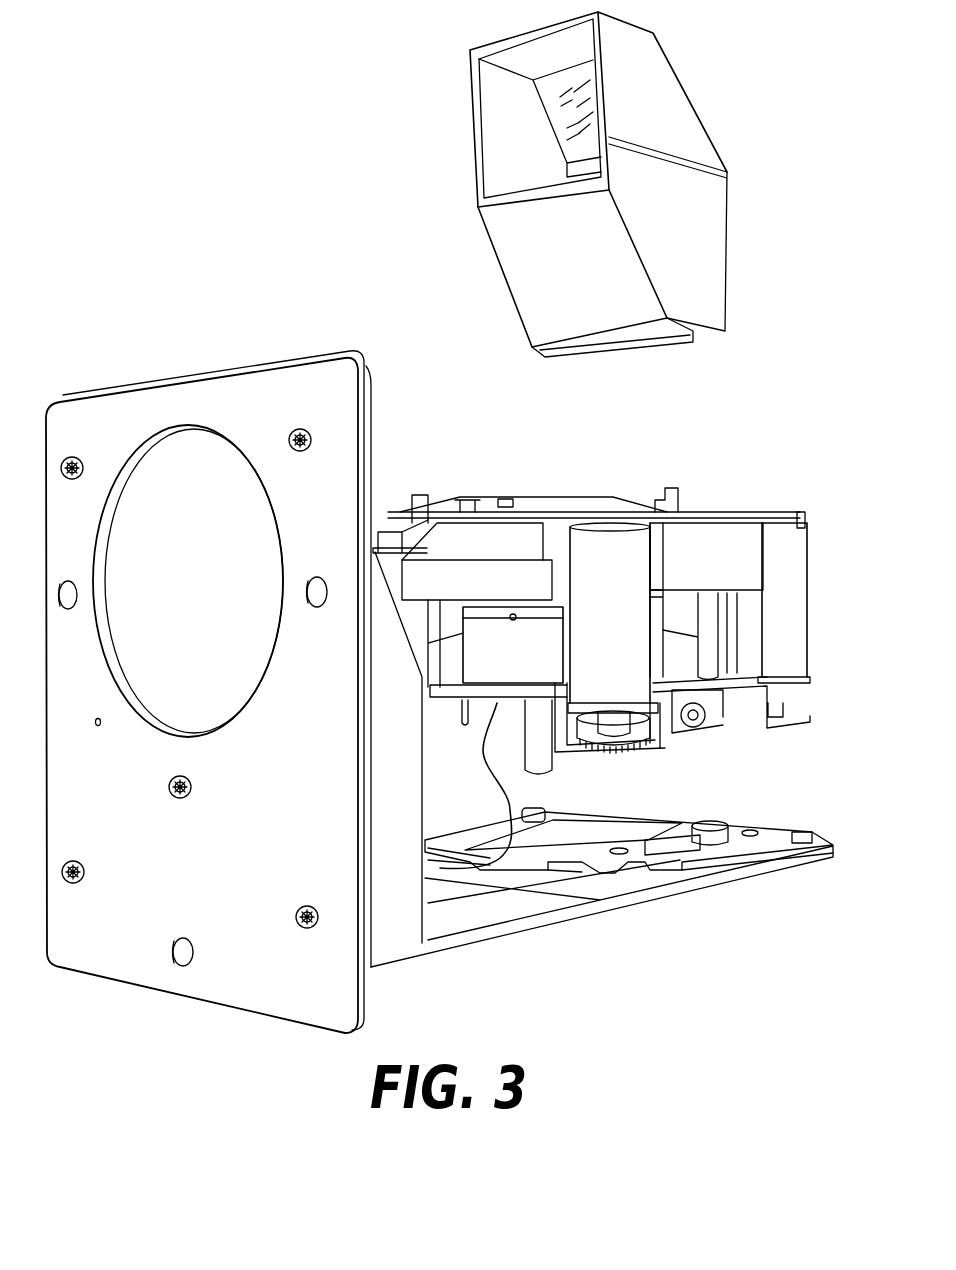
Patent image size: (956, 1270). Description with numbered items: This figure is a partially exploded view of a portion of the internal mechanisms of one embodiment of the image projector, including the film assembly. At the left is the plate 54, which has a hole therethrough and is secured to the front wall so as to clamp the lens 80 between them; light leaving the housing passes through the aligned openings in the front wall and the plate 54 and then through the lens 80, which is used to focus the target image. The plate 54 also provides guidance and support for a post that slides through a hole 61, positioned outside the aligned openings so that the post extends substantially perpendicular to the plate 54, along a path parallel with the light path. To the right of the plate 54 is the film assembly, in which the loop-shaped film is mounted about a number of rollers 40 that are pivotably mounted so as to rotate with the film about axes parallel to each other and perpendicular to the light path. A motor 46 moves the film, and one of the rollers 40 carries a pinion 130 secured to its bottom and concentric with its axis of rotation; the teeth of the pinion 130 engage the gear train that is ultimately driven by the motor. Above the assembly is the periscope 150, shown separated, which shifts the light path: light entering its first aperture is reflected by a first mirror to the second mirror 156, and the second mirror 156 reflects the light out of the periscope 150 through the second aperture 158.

The roller 40 is at (627, 530).
The motor 46 is at (538, 655).
The plate 54 is at (383, 987).
The hole 61 is at (190, 940).
The lens 80 is at (250, 637).
The pinion 130 is at (648, 757).
The periscope 150 is at (611, 184).
The second mirror 156 is at (587, 103).
The second aperture 158 is at (477, 129).